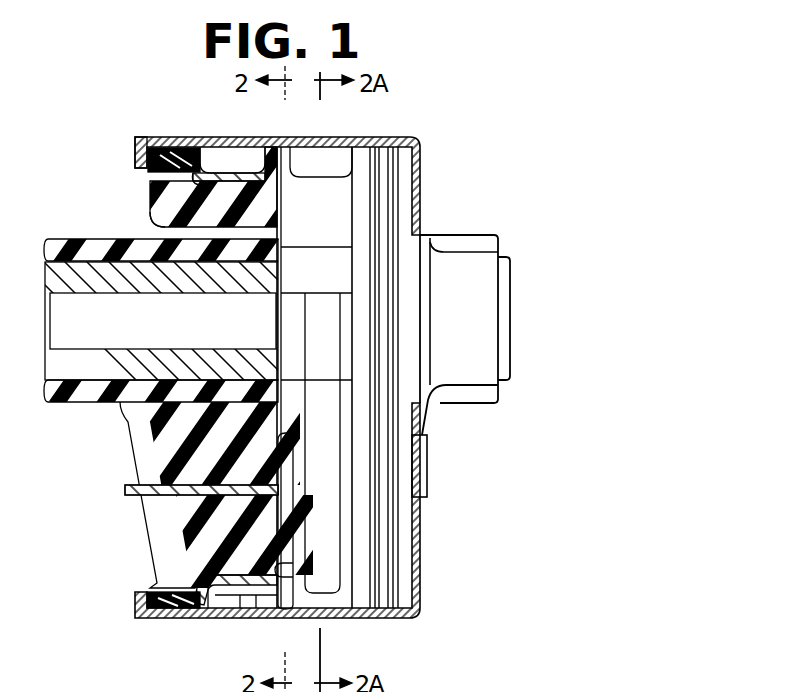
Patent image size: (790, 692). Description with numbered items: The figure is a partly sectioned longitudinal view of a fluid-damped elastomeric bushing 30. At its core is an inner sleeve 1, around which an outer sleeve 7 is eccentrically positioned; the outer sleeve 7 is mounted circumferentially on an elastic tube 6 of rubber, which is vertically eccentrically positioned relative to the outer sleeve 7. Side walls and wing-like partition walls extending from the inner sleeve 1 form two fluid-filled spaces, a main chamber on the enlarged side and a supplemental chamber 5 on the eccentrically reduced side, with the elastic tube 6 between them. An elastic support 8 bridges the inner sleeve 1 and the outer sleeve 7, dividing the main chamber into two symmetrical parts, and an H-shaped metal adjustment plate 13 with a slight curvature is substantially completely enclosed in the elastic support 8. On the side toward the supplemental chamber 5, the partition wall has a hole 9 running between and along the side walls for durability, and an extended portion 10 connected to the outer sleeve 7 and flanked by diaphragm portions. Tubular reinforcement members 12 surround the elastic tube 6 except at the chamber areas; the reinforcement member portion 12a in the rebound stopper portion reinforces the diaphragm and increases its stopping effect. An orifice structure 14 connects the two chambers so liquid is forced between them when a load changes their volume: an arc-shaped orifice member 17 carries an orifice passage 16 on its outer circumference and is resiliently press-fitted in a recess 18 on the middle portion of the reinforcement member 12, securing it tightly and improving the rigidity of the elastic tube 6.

The inner sleeve 1 is at (91, 276).
The supplemental chamber 5 is at (233, 152).
The elastic tube 6 is at (131, 465).
The outer sleeve 7 is at (325, 142).
The elastic support 8 is at (165, 541).
The hole 9 is at (163, 235).
The extended portion 10 is at (268, 160).
The tubular reinforcement member 12 is at (197, 150).
The reinforcement member portion 12a is at (138, 143).
The adjustment plate 13 is at (157, 493).
The orifice structure 14 is at (235, 600).
The orifice passage 16 is at (284, 610).
The orifice member 17 is at (242, 600).
The recess 18 is at (205, 605).
The fluid-damped elastomeric bushing 30 is at (447, 171).